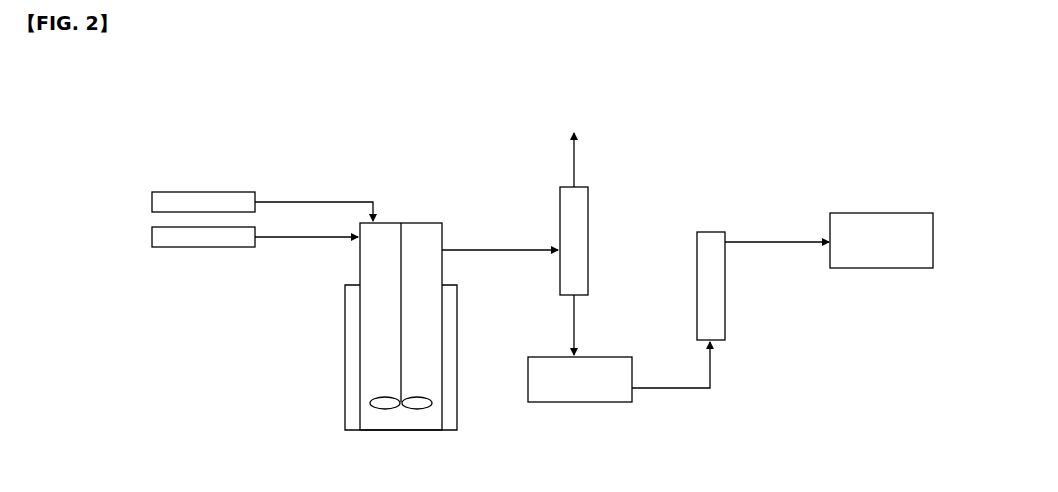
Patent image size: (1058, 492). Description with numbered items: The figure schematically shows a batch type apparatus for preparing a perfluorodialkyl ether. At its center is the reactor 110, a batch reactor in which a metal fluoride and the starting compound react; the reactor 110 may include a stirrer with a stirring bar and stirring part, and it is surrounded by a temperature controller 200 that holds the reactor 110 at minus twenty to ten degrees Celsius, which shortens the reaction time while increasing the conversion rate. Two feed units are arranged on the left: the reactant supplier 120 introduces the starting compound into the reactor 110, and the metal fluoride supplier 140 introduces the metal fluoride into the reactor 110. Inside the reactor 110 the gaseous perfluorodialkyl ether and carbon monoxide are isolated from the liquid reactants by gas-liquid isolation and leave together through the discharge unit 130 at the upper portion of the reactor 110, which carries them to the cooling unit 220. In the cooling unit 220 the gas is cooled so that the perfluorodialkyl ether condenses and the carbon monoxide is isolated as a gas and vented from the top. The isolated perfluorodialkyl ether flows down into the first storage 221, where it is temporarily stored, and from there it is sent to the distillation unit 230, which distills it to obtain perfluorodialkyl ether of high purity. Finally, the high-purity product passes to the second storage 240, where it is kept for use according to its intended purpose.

The reactor 110 is at (393, 432).
The reactant supplier 120 is at (152, 235).
The discharge unit 130 is at (491, 248).
The metal fluoride supplier 140 is at (213, 190).
The temperature controller 200 is at (457, 305).
The cooling unit 220 is at (588, 252).
The first storage 221 is at (580, 404).
The distillation unit 230 is at (725, 309).
The second storage 240 is at (872, 270).